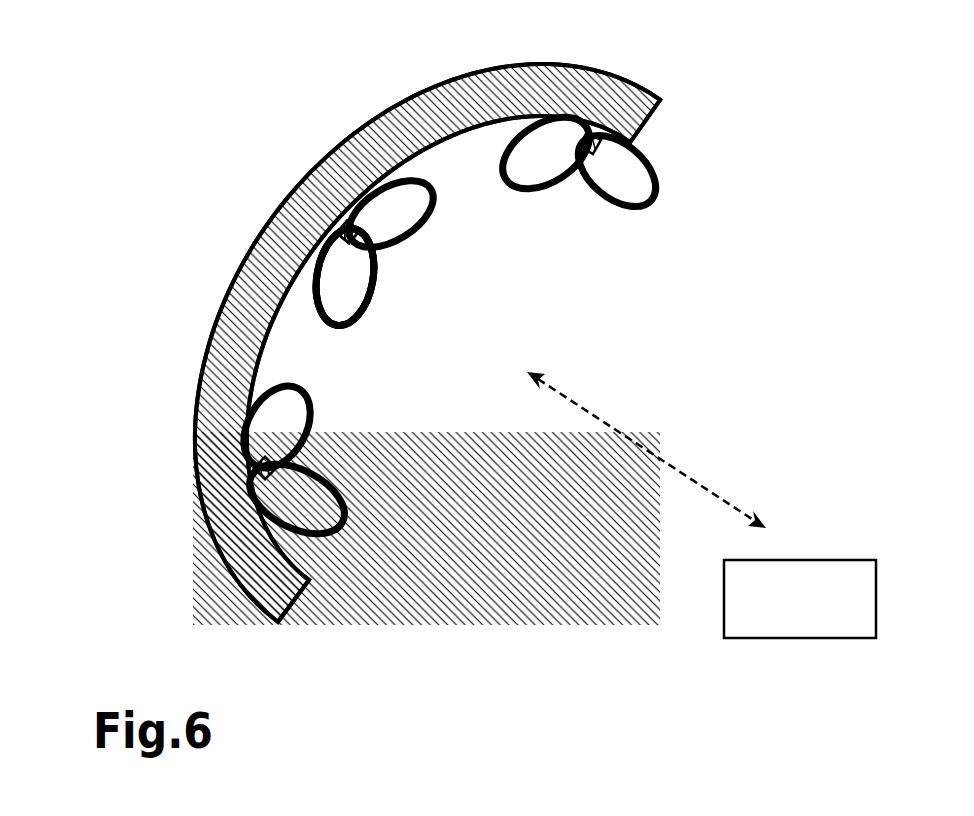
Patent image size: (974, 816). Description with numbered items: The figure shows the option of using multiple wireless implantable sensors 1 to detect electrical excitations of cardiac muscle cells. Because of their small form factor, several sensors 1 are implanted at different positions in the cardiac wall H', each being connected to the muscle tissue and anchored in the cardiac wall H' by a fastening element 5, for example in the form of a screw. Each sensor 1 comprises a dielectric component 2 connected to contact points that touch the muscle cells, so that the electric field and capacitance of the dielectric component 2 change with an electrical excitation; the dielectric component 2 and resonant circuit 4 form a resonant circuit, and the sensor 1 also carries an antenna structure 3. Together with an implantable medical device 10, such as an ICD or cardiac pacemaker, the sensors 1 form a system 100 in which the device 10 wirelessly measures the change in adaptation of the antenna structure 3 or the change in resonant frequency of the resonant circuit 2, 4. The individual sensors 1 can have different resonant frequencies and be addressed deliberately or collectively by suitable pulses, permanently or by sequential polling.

The fastening element 5 is at (332, 219).
The cardiac wall H' is at (569, 343).
The implantable sensor 1 is at (382, 270).
The dielectric component 2 is at (361, 231).
The antenna structure 3 is at (330, 320).
The resonant circuit 4 is at (332, 328).
The system 100 is at (771, 492).
The implantable medical device 10 is at (817, 617).